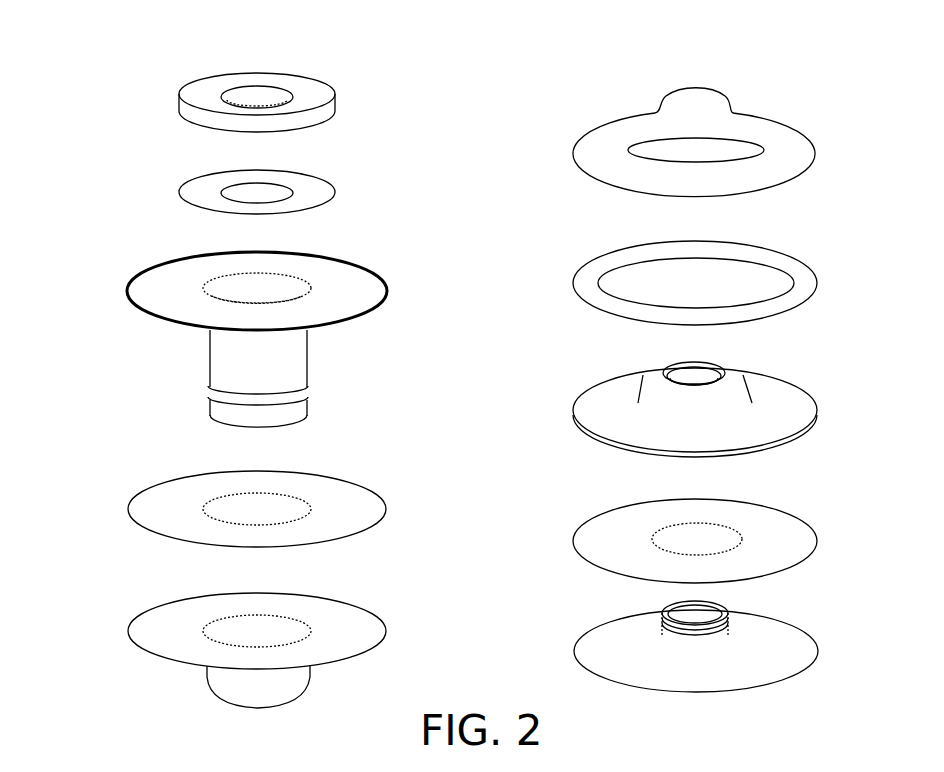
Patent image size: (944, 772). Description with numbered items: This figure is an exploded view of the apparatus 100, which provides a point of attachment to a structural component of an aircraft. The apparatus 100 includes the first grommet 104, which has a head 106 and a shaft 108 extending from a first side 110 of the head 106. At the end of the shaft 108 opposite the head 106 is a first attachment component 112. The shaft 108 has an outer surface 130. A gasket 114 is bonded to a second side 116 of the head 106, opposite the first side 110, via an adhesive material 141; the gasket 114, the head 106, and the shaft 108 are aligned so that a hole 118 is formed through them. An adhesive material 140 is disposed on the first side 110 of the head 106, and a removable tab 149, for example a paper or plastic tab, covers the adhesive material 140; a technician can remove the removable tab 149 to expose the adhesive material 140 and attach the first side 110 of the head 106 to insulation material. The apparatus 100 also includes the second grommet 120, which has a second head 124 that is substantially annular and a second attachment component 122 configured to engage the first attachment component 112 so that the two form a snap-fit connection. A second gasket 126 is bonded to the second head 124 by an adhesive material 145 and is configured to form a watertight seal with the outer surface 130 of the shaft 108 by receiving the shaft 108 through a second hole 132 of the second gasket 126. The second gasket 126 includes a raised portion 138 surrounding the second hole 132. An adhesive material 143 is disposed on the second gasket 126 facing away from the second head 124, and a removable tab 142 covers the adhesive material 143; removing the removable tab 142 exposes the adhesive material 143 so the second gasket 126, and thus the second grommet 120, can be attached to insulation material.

The apparatus 100 is at (735, 660).
The first grommet 104 is at (238, 645).
The head 106 is at (163, 300).
The shaft 108 is at (228, 357).
The first side 110 is at (259, 349).
The first attachment component 112 is at (300, 401).
The gasket 114 is at (205, 100).
The second side 116 is at (272, 314).
The hole 118 is at (235, 74).
The second grommet 120 is at (735, 119).
The second attachment component 122 is at (728, 618).
The second head 124 is at (721, 636).
The second gasket 126 is at (724, 394).
The outer surface 130 is at (293, 352).
The second hole 132 is at (689, 372).
The raised portion 138 is at (737, 382).
The adhesive material 140 is at (352, 508).
The adhesive material 141 is at (315, 192).
The removable tab 142 is at (798, 158).
The adhesive material 143 is at (798, 278).
The adhesive material 145 is at (790, 547).
The removable tab 149 is at (365, 630).